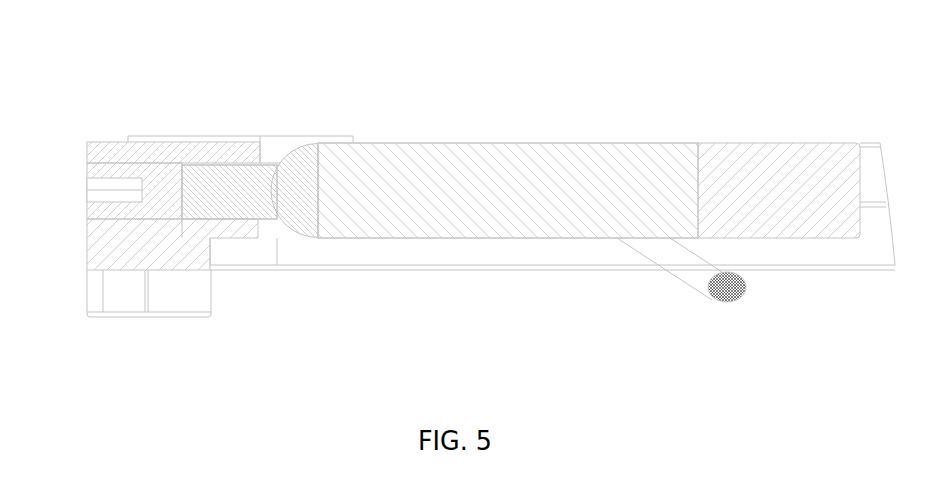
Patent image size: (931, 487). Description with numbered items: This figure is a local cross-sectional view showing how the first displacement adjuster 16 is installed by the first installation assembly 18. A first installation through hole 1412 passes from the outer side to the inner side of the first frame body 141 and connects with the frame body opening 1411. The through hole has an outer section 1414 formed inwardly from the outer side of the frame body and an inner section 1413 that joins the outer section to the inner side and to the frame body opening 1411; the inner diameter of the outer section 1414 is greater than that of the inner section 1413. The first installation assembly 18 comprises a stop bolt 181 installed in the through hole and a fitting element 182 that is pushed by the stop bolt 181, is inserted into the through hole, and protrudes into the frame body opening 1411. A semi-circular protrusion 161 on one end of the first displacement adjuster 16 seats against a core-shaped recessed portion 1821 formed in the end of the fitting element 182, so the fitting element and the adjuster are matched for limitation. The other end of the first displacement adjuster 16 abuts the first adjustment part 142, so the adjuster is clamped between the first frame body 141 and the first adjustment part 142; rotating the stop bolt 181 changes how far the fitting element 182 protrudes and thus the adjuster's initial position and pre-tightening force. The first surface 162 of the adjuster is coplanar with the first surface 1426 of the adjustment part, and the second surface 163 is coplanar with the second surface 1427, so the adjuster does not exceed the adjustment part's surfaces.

The first frame body 141 is at (102, 247).
The frame body opening 1411 is at (275, 162).
The first installation through hole 1412 is at (89, 169).
The inner section 1413 is at (207, 168).
The outer section 1414 is at (138, 165).
The first adjustment part 142 is at (752, 175).
The first surface of the first adjustment part 1426 is at (798, 145).
The second surface of the first adjustment part 1427 is at (819, 239).
The first displacement adjuster 16 is at (420, 173).
The semi-circular protrusion 161 is at (302, 170).
The first surface of the first displacement adjuster 162 is at (527, 145).
The second surface of the first displacement adjuster 163 is at (520, 239).
The first installation assembly 18 is at (192, 212).
The stop bolt 181 is at (167, 195).
The fitting element 182 is at (220, 180).
The recessed portion 1821 is at (270, 193).